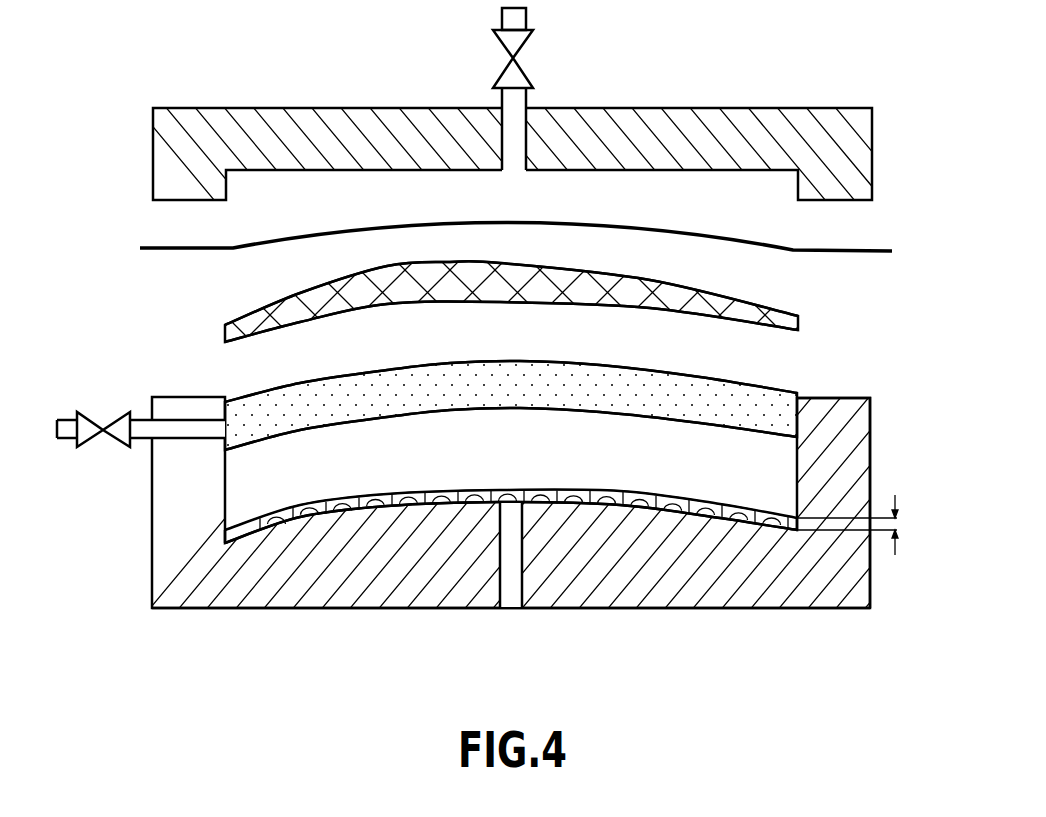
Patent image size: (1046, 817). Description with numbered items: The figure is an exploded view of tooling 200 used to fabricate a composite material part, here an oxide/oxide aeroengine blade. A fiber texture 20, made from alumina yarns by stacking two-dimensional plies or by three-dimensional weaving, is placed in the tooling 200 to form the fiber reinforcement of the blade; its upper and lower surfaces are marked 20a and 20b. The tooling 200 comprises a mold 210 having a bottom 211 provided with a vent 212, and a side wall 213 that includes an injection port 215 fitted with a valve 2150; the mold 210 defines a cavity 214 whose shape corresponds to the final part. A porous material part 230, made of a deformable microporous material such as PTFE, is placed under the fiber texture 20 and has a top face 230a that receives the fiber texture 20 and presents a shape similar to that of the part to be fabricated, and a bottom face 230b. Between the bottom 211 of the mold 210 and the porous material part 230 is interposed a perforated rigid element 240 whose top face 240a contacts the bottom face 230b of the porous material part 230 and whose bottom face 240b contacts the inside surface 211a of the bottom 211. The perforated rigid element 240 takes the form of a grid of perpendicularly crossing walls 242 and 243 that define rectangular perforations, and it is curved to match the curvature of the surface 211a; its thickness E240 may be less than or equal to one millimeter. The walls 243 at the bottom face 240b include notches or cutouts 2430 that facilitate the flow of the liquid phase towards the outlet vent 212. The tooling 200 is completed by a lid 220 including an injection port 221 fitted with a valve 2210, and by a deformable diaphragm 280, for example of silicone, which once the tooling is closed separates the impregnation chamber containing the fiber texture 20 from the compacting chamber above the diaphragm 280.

The tooling 200 is at (152, 80).
The lid 220 is at (828, 138).
The injection port 221 is at (518, 97).
The valve 2210 is at (508, 47).
The deformable diaphragm 280 is at (365, 228).
The fiber texture 20 is at (517, 282).
The first face of optical element 20a is at (637, 270).
The second face of optical element 20b is at (655, 310).
The porous material part 230 is at (427, 383).
The top face of porous material part 230a is at (752, 383).
The bottom face of porous material part 230b is at (525, 412).
The mold 210 is at (873, 468).
The bottom of mold 211 is at (677, 587).
The inside surface of bottom 211a is at (433, 500).
The vent 212 is at (512, 583).
The side wall 213 is at (825, 430).
The cavity 214 is at (561, 458).
The injection port 215 is at (172, 428).
The valve 2150 is at (120, 420).
The perforated rigid element 240 is at (218, 541).
The top face of perforated rigid element 240a is at (311, 512).
The bottom face of perforated rigid element 240b is at (303, 528).
The walls 242 is at (597, 490).
The walls 243 is at (755, 509).
The notches or cutouts 2430 is at (708, 502).
The thickness of perforated rigid element E240 is at (873, 525).